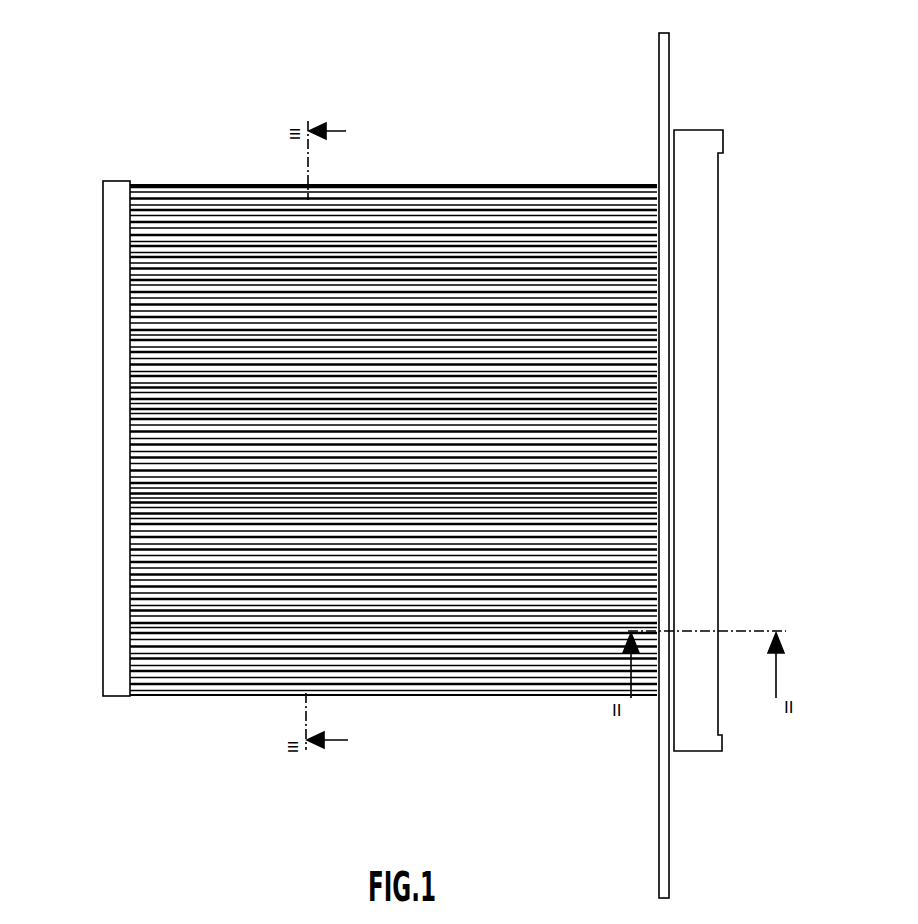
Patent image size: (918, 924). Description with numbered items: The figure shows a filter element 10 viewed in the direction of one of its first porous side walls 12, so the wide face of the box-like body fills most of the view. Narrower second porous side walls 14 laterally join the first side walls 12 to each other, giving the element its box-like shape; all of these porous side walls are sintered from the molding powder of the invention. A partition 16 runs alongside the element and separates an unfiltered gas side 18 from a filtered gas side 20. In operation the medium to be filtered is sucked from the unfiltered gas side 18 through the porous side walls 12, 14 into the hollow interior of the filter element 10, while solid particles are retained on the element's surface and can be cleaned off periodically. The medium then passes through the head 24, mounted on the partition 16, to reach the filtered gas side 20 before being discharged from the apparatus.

The filter element 10 is at (345, 423).
The first porous side wall 12 is at (176, 535).
The second porous side wall 14 is at (198, 178).
The partition 16 is at (662, 44).
The unfiltered gas side 18 is at (600, 107).
The filtered gas side 20 is at (752, 436).
The head 24 is at (688, 725).